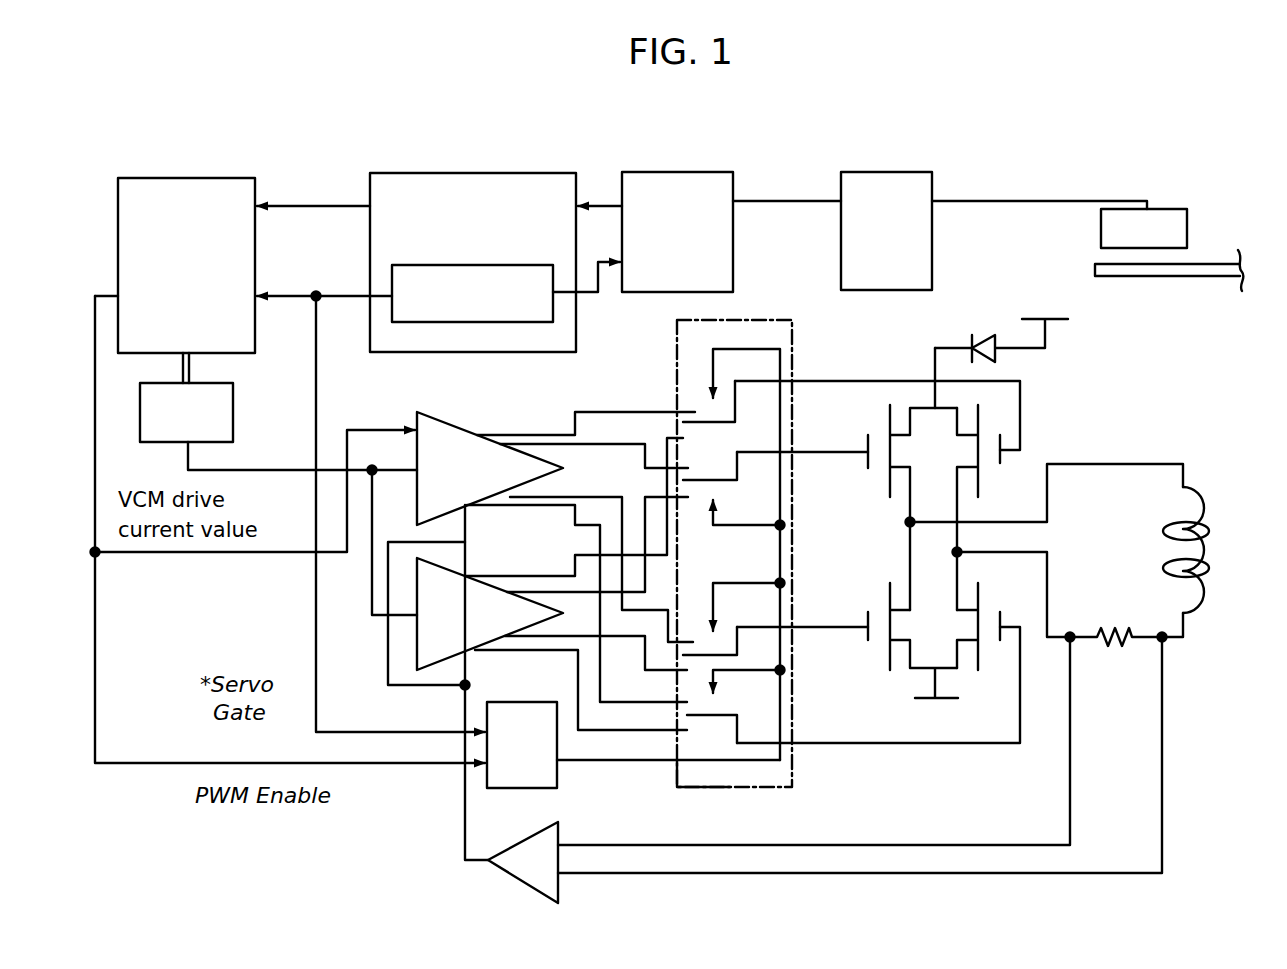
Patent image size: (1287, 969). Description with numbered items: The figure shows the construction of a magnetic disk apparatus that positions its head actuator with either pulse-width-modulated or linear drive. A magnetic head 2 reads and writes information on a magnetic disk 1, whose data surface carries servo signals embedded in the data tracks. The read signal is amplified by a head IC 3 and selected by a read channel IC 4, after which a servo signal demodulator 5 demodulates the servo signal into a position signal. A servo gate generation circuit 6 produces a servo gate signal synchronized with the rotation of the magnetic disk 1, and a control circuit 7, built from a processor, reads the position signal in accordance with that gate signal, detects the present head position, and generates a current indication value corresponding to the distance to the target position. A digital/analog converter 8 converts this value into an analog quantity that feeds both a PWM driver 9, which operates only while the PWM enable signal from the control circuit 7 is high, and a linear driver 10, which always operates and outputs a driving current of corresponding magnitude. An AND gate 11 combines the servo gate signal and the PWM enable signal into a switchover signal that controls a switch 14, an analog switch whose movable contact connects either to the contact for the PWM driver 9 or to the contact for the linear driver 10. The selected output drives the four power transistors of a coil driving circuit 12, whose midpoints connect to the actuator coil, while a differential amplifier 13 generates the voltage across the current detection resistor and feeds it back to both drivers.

The magnetic disk 1 is at (1180, 277).
The magnetic head 2 is at (1178, 209).
The head IC 3 is at (925, 172).
The read channel IC 4 is at (733, 172).
The servo signal demodulator 5 is at (555, 173).
The servo gate generation circuit 6 is at (527, 322).
The control circuit 7 is at (232, 178).
The digital/analog converter 8 is at (233, 407).
The PWM driver 9 is at (466, 432).
The linear driver 10 is at (462, 576).
The AND gate 11 is at (557, 780).
The coil driving circuit 12 is at (1034, 379).
The differential amplifier 13 is at (506, 872).
The switch 14 is at (792, 345).